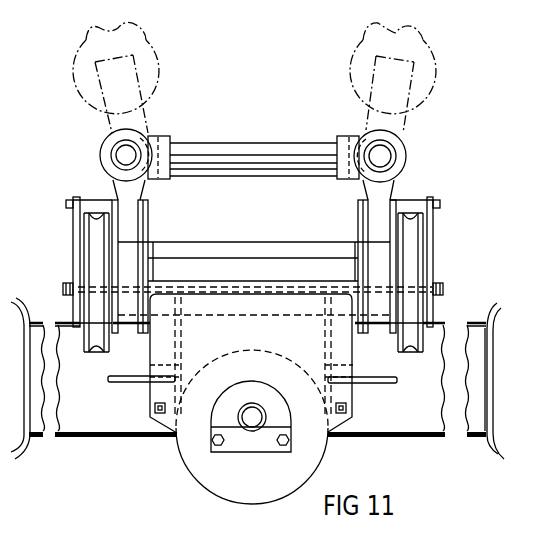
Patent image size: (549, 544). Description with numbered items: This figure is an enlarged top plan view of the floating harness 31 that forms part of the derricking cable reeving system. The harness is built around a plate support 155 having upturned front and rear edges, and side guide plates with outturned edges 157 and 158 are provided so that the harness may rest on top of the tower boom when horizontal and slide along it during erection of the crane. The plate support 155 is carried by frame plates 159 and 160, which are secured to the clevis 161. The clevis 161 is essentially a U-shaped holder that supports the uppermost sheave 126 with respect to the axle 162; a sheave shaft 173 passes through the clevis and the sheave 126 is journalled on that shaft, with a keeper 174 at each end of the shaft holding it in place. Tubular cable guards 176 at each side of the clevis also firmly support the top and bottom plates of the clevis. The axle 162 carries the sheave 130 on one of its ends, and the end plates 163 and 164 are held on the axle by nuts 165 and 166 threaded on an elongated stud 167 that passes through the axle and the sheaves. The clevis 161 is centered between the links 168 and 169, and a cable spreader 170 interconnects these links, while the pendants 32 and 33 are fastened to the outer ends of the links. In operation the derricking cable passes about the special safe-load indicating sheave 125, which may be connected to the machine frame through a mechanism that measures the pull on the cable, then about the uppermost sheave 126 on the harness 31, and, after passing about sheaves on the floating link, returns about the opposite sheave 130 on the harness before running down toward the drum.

The floating harness 31 is at (458, 240).
The pendant 32 is at (150, 48).
The pendant 33 is at (433, 45).
The safe-load indicating sheave 125 is at (412, 266).
The uppermost sheave 126 is at (243, 487).
The sheave 130 is at (90, 236).
The plate support 155 is at (383, 428).
The outturned edge 157 is at (24, 452).
The outturned edge 158 is at (491, 406).
The frame plate 159 is at (183, 346).
The frame plate 160 is at (350, 363).
The clevis 161 is at (350, 393).
The axle 162 is at (158, 252).
The end plate 163 is at (73, 257).
The end plate 164 is at (424, 226).
The nut 165 is at (62, 290).
The nut 166 is at (442, 290).
The elongated stud 167 is at (255, 287).
The link 168 is at (137, 213).
The link 169 is at (366, 221).
The cable spreader 170 is at (262, 149).
The sheave shaft 173 is at (258, 412).
The keeper 174 is at (266, 444).
The tubular cable guard 176 is at (349, 410).